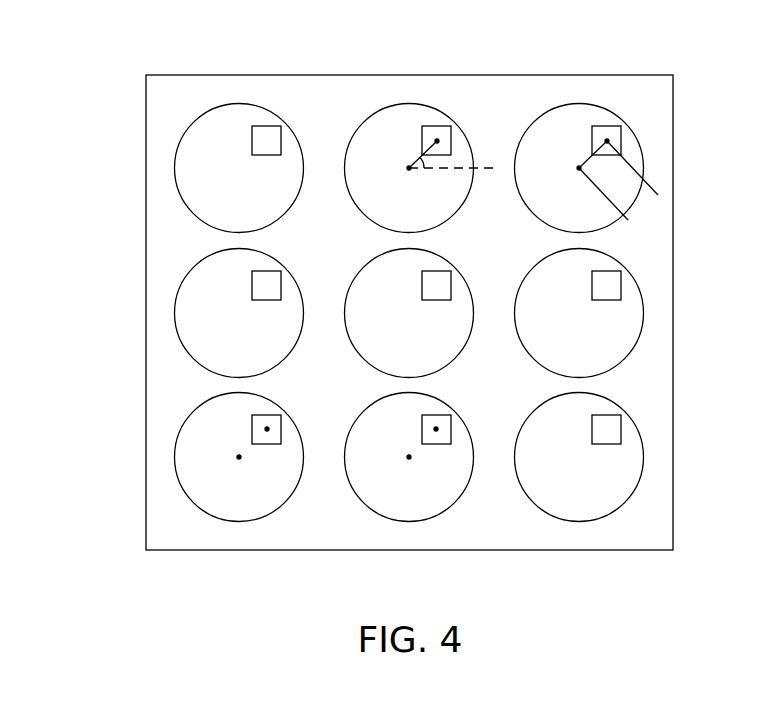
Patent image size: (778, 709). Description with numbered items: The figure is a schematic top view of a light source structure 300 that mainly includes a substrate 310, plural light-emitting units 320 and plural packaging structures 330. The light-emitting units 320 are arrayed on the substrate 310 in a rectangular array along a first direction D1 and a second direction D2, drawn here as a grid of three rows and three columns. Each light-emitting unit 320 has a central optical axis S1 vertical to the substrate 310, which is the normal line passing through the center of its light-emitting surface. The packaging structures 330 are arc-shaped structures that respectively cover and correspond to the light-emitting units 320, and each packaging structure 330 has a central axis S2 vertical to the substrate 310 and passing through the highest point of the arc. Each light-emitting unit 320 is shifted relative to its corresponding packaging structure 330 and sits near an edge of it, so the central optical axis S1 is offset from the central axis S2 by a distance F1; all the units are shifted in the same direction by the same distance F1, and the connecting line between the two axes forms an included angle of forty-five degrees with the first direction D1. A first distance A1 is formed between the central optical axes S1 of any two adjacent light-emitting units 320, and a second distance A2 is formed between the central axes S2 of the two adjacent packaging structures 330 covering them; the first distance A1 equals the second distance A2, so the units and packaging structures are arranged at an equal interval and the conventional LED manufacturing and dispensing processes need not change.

The light source structure 300 is at (93, 45).
The substrate 310 is at (660, 97).
The light-emitting unit 320 is at (610, 288).
The packaging structure 330 is at (610, 337).
The central optical axis S1 is at (437, 141).
The central axis S2 is at (409, 168).
The distance F1 is at (653, 189).
The first direction D1 is at (262, 43).
The second direction D2 is at (95, 290).
The first distance A1 is at (436, 429).
The second distance A2 is at (239, 457).